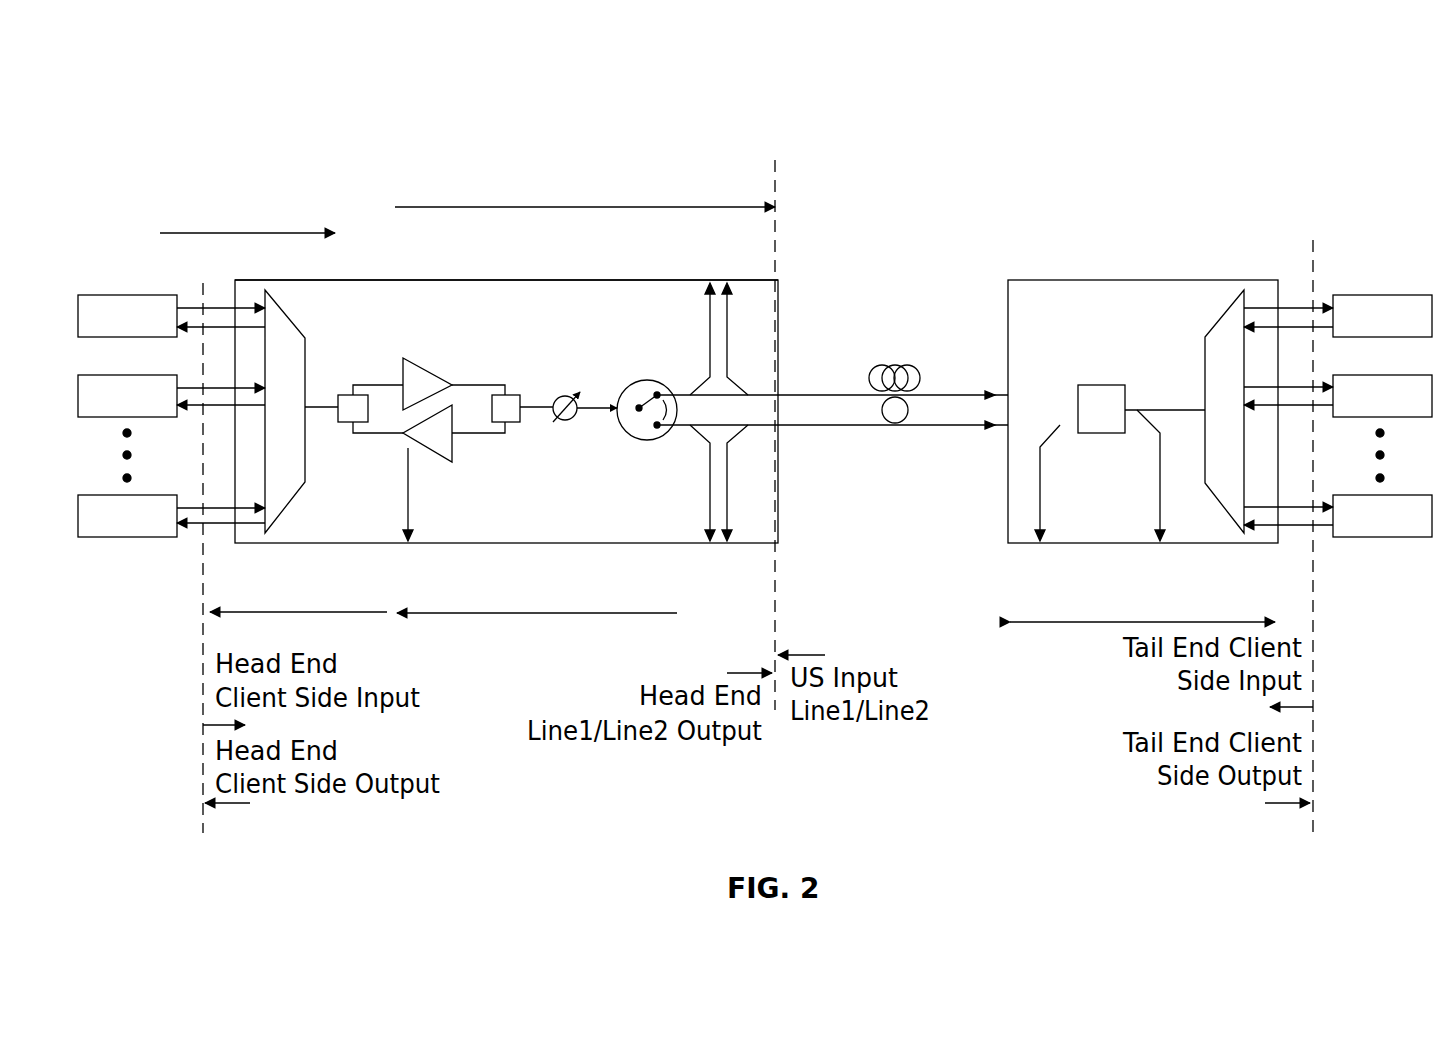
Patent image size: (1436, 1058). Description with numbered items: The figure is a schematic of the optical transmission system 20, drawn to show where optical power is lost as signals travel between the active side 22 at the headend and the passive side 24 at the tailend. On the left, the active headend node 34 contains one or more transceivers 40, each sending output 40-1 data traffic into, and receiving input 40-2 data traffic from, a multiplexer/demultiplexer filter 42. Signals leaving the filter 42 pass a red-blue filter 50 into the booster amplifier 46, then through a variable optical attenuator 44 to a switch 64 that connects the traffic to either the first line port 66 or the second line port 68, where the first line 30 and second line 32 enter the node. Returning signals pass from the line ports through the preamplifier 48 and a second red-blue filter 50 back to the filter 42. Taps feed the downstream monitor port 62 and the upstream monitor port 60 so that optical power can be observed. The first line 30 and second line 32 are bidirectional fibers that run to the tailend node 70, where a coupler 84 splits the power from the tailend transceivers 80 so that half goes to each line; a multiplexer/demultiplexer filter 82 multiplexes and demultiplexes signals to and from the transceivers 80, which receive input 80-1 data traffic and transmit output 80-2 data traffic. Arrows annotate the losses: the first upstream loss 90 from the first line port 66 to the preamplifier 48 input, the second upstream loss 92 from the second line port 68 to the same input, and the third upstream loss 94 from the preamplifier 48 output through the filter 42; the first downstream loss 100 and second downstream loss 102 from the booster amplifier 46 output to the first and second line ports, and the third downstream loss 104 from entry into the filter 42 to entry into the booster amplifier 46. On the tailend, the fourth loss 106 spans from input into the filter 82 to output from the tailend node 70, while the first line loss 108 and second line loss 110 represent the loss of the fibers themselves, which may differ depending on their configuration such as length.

The optical transmission system 20 is at (632, 145).
The active side 22 is at (135, 140).
The passive side 24 is at (1130, 200).
The first line 30 is at (965, 395).
The second line 32 is at (995, 427).
The active headend node 34 is at (380, 281).
The transceivers 40 is at (138, 295).
The output 40-1 is at (195, 308).
The input 40-2 is at (222, 325).
The multiplexer/demultiplexer filter 42 is at (287, 505).
The variable optical attenuator 44 is at (558, 395).
The booster amplifier 46 is at (403, 358).
The preamplifier 48 is at (452, 450).
The red-blue filter 50 is at (345, 425).
The upstream monitor port 60 is at (405, 508).
The downstream monitor port 62 is at (710, 330).
The switch 64 is at (640, 382).
The first line port 66 is at (780, 395).
The second line port 68 is at (780, 425).
The tailend node 70 is at (1060, 280).
The transceivers 80 is at (1382, 295).
The input 80-1 is at (1270, 308).
The output 80-2 is at (1280, 322).
The multiplexer/demultiplexer filter 82 is at (1215, 330).
The coupler 84 is at (1100, 433).
The first upstream loss 90 is at (425, 615).
The second upstream loss 92 is at (575, 615).
The third upstream loss 94 is at (275, 615).
The first downstream loss 100 is at (395, 207).
The second downstream loss 102 is at (685, 207).
The third downstream loss 104 is at (175, 228).
The fourth loss 106 is at (1090, 626).
The first line loss 108 is at (878, 370).
The second line loss 110 is at (882, 405).